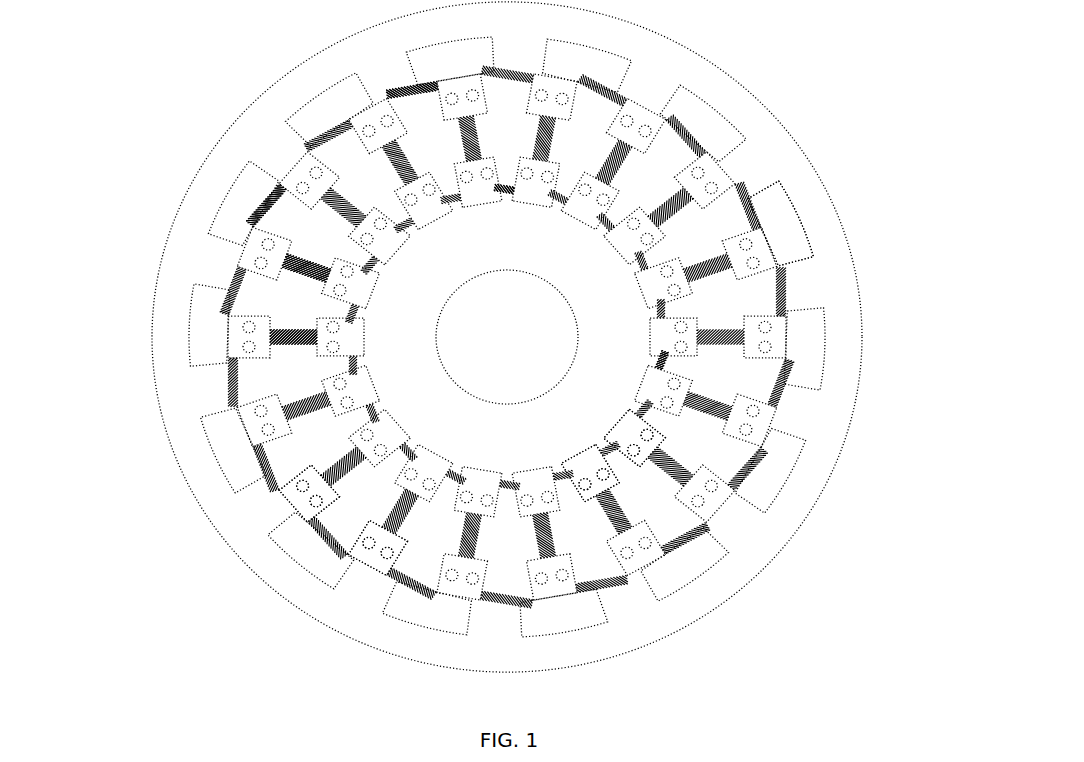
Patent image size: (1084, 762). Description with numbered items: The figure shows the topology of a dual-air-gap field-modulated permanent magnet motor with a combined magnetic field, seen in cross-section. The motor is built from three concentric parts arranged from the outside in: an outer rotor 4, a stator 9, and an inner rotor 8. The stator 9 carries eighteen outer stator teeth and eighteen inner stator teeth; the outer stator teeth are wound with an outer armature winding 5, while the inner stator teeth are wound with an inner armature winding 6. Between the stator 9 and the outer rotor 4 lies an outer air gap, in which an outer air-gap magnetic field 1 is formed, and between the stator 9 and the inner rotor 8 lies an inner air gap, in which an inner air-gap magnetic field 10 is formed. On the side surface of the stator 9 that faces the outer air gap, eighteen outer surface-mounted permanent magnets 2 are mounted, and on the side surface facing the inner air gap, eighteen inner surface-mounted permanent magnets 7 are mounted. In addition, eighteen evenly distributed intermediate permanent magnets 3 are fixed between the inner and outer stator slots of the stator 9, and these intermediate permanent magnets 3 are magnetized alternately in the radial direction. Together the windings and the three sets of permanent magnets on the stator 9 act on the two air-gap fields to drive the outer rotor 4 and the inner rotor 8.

The outer air-gap magnetic field 1 is at (400, 88).
The outer surface-mounted permanent magnet 2 is at (260, 208).
The intermediate permanent magnet 3 is at (297, 270).
The outer rotor 4 is at (197, 392).
The outer armature winding 5 is at (362, 547).
The inner armature winding 6 is at (605, 478).
The inner surface-mounted permanent magnet 7 is at (643, 412).
The inner rotor 8 is at (607, 342).
The stator 9 is at (683, 233).
The inner air-gap magnetic field 10 is at (562, 205).